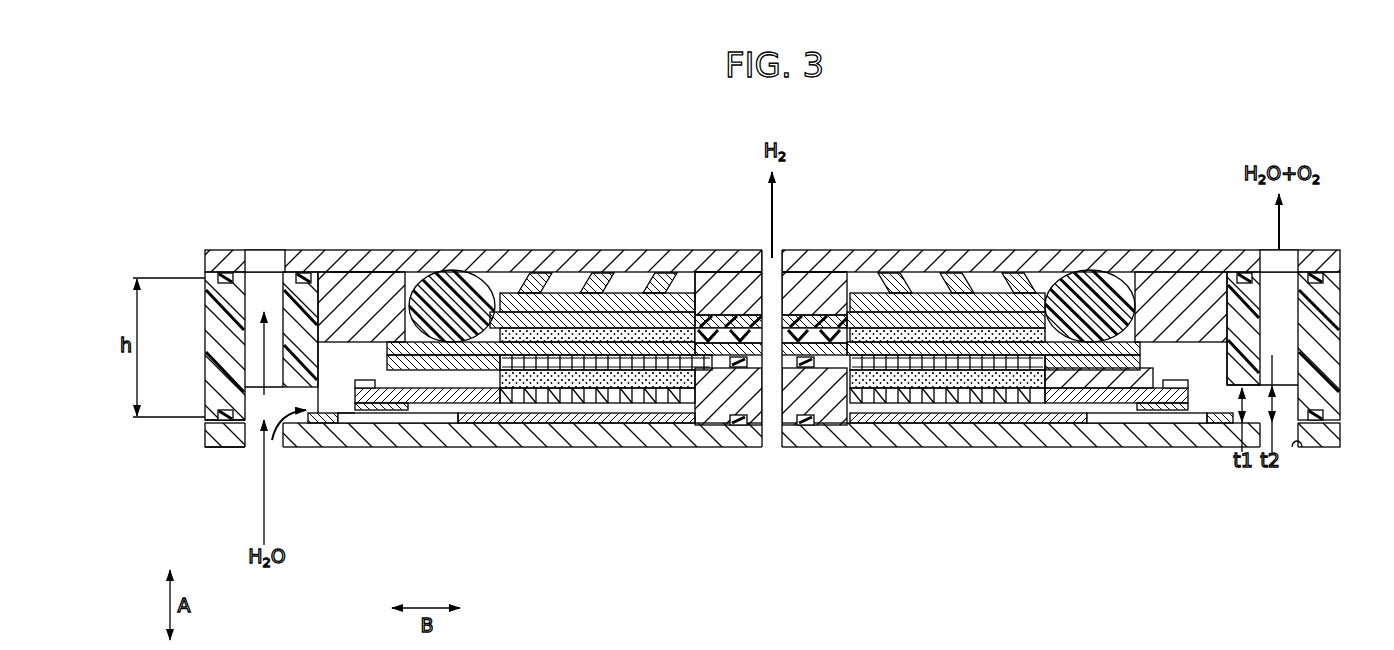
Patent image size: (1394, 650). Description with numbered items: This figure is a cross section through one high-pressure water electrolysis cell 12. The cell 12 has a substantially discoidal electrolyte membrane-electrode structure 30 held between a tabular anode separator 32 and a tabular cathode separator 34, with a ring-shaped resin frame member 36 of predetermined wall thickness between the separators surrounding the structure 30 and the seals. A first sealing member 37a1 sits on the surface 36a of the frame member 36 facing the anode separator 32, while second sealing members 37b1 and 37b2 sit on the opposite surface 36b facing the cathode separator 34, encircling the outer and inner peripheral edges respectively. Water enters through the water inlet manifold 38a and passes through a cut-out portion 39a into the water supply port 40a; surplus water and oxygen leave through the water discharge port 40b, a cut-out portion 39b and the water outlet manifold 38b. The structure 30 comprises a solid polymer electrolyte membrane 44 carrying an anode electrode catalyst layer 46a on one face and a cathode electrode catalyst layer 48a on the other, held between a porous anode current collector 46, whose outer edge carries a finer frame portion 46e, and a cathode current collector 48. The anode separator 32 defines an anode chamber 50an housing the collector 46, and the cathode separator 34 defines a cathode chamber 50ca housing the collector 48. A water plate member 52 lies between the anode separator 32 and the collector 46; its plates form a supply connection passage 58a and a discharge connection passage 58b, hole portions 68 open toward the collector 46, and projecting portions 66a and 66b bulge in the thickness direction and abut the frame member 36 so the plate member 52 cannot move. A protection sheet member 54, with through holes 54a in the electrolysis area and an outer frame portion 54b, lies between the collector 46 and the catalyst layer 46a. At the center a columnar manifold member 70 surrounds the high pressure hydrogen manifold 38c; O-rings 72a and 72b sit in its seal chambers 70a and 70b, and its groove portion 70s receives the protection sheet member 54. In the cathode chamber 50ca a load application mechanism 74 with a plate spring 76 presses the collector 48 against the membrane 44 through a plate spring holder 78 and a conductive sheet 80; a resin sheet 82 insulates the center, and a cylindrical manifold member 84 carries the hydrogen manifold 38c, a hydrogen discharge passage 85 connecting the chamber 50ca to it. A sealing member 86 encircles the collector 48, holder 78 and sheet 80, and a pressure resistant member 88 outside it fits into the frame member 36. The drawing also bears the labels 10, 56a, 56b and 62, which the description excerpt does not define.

The water electrolysis device 10 is at (896, 117).
The high-pressure water electrolysis cell 12 is at (862, 117).
The electrolyte membrane-electrode structure 30 is at (392, 330).
The anode separator 32 is at (1322, 448).
The cathode separator 34 is at (1313, 250).
The resin frame member 36 is at (203, 337).
The surface 36a is at (208, 450).
The surface 36b is at (292, 271).
The first sealing member 37a1 is at (229, 448).
The second sealing member 37b1 is at (227, 272).
The second sealing member 37b2 is at (306, 272).
The water inlet manifold 38a is at (280, 448).
The water outlet manifold 38b is at (1300, 438).
The high pressure hydrogen manifold 38c is at (774, 448).
The cut-out portion 39a is at (297, 388).
The cut-out portion 39b is at (1255, 383).
The water supply port 40a is at (318, 420).
The water discharge port 40b is at (1228, 400).
The solid polymer electrolyte membrane 44 is at (491, 318).
The anode current collector 46 is at (565, 386).
The anode electrode catalyst layer 46a is at (540, 395).
The frame portion 46e is at (470, 404).
The cathode current collector 48 is at (601, 283).
The cathode electrode catalyst layer 48a is at (556, 300).
The anode chamber 50an is at (346, 412).
The cathode chamber 50ca is at (648, 283).
The water plate member 52 is at (503, 424).
The protection sheet member 54 is at (1113, 380).
The through holes 54a is at (1021, 372).
The frame portion 54b is at (1149, 405).
The anode-side seal 56a is at (320, 424).
The cathode-side seal 56b is at (1218, 412).
The supply connection passage 58a is at (392, 424).
The discharge connection passage 58b is at (1180, 424).
The porous layer 62 is at (603, 403).
The projecting portion 66a is at (373, 381).
The projecting portion 66b is at (1177, 381).
The hole portions 68 is at (662, 400).
The manifold member 70 is at (827, 428).
The seal chamber 70a is at (753, 300).
The seal chamber 70b is at (758, 440).
The groove portion 70s is at (704, 271).
The O-ring 72a is at (730, 290).
The O-ring 72b is at (738, 426).
The load application mechanism 74 is at (1008, 283).
The plate spring 76 is at (895, 283).
The plate spring holder 78 is at (946, 283).
The conductive sheet 80 is at (1030, 300).
The resin sheet 82 is at (794, 345).
The manifold member 84 is at (815, 275).
The hydrogen discharge passage 85 is at (717, 275).
The sealing member 86 is at (448, 272).
The pressure resistant member 88 is at (366, 265).